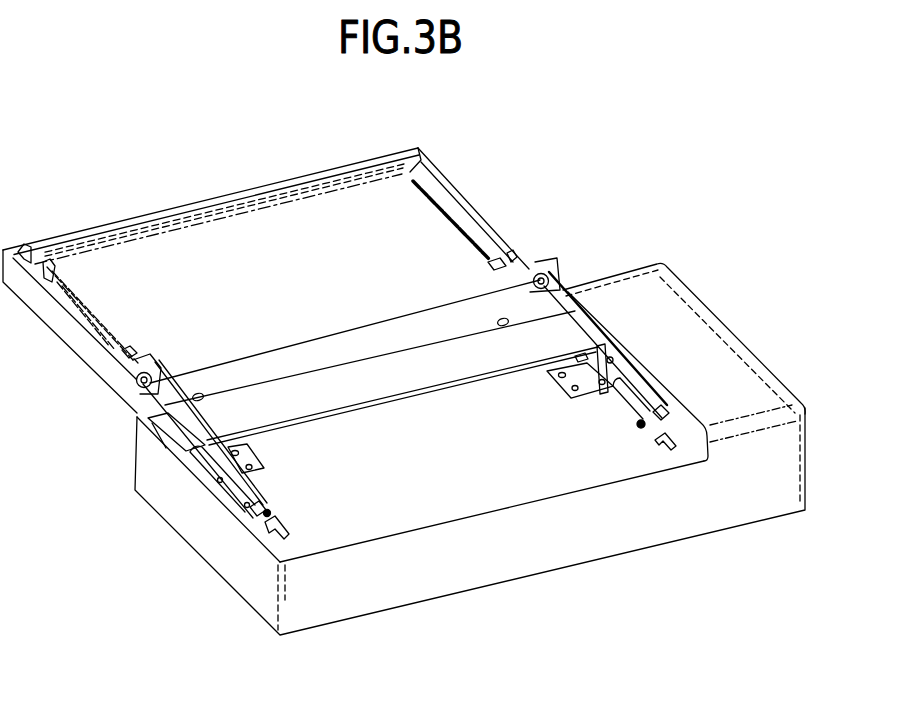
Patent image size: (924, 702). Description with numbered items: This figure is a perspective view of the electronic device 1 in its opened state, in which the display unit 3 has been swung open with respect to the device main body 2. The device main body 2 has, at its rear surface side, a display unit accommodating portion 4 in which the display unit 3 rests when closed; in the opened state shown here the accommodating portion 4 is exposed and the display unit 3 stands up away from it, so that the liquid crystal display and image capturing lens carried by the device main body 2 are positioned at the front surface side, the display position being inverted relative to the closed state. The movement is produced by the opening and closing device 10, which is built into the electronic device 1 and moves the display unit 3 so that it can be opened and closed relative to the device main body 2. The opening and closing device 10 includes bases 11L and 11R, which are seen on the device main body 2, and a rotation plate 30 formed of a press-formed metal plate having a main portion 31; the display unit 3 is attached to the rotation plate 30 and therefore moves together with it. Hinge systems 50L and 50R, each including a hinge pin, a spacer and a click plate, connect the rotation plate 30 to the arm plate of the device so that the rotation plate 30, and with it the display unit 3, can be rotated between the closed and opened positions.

The electronic device 1 is at (691, 98).
The device main body 2 is at (632, 540).
The display unit 3 is at (207, 168).
The display unit accommodating portion 4 is at (512, 485).
The opening and closing device 10 is at (584, 250).
The rotation plate 30 is at (327, 202).
The main portion 31 is at (128, 262).
The hinge system 50L is at (126, 392).
The hinge system 50R is at (531, 266).
The base 11L is at (262, 453).
The base 11R is at (551, 389).